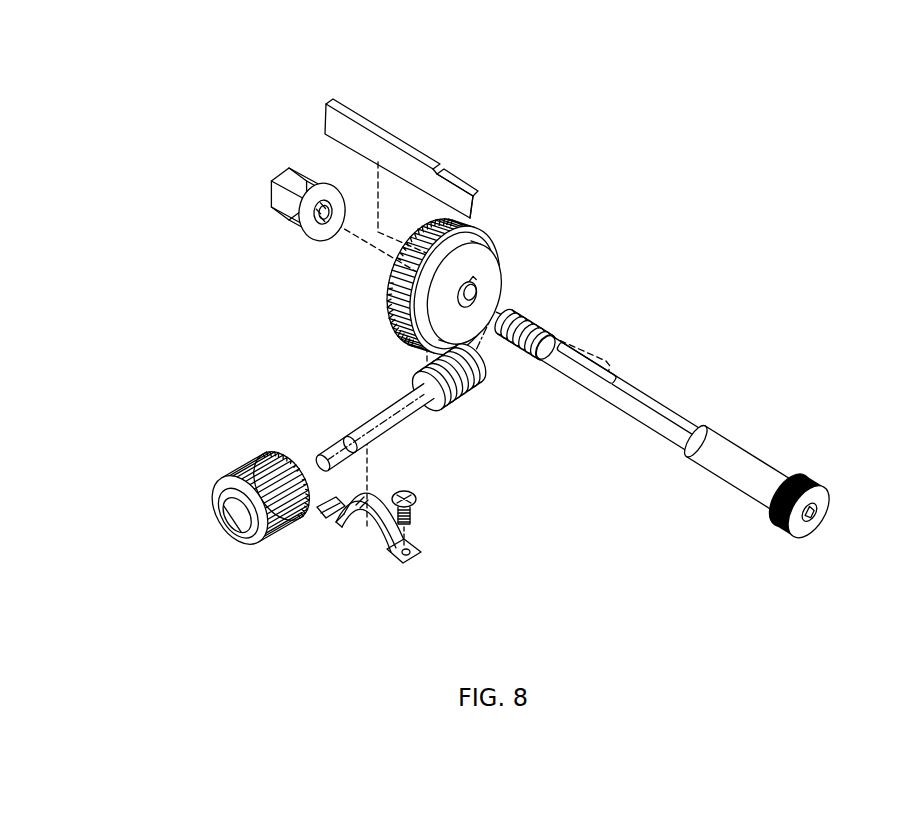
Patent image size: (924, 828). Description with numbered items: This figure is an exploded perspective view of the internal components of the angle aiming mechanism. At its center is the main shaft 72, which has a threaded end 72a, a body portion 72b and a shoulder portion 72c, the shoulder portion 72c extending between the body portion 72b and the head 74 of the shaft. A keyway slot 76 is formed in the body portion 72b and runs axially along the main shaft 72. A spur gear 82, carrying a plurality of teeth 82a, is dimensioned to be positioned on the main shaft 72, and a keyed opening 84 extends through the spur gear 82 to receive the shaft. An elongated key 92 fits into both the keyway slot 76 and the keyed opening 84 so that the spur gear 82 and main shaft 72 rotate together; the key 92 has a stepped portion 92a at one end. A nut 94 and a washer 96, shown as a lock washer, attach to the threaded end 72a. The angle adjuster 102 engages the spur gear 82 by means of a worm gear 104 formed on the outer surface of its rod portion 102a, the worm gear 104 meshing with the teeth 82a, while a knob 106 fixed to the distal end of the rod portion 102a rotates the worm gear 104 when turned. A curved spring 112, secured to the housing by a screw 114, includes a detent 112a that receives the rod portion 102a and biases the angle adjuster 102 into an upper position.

The main shaft 72 is at (696, 377).
The threaded end 72a is at (525, 340).
The body portion 72b is at (637, 408).
The shoulder portion 72c is at (767, 460).
The head 74 is at (817, 508).
The keyway slot 76 is at (650, 400).
The spur gear 82 is at (414, 288).
The teeth 82a is at (400, 297).
The keyed opening 84 is at (462, 299).
The key 92 is at (424, 126).
The stepped portion 92a is at (458, 187).
The nut 94 is at (256, 210).
The washer 96 is at (292, 235).
The angle adjuster 102 is at (333, 460).
The rod portion 102a is at (388, 438).
The worm gear 104 is at (462, 404).
The knob 106 is at (232, 520).
The spring 112 is at (339, 560).
The detent 112a is at (355, 518).
The screw 114 is at (413, 523).